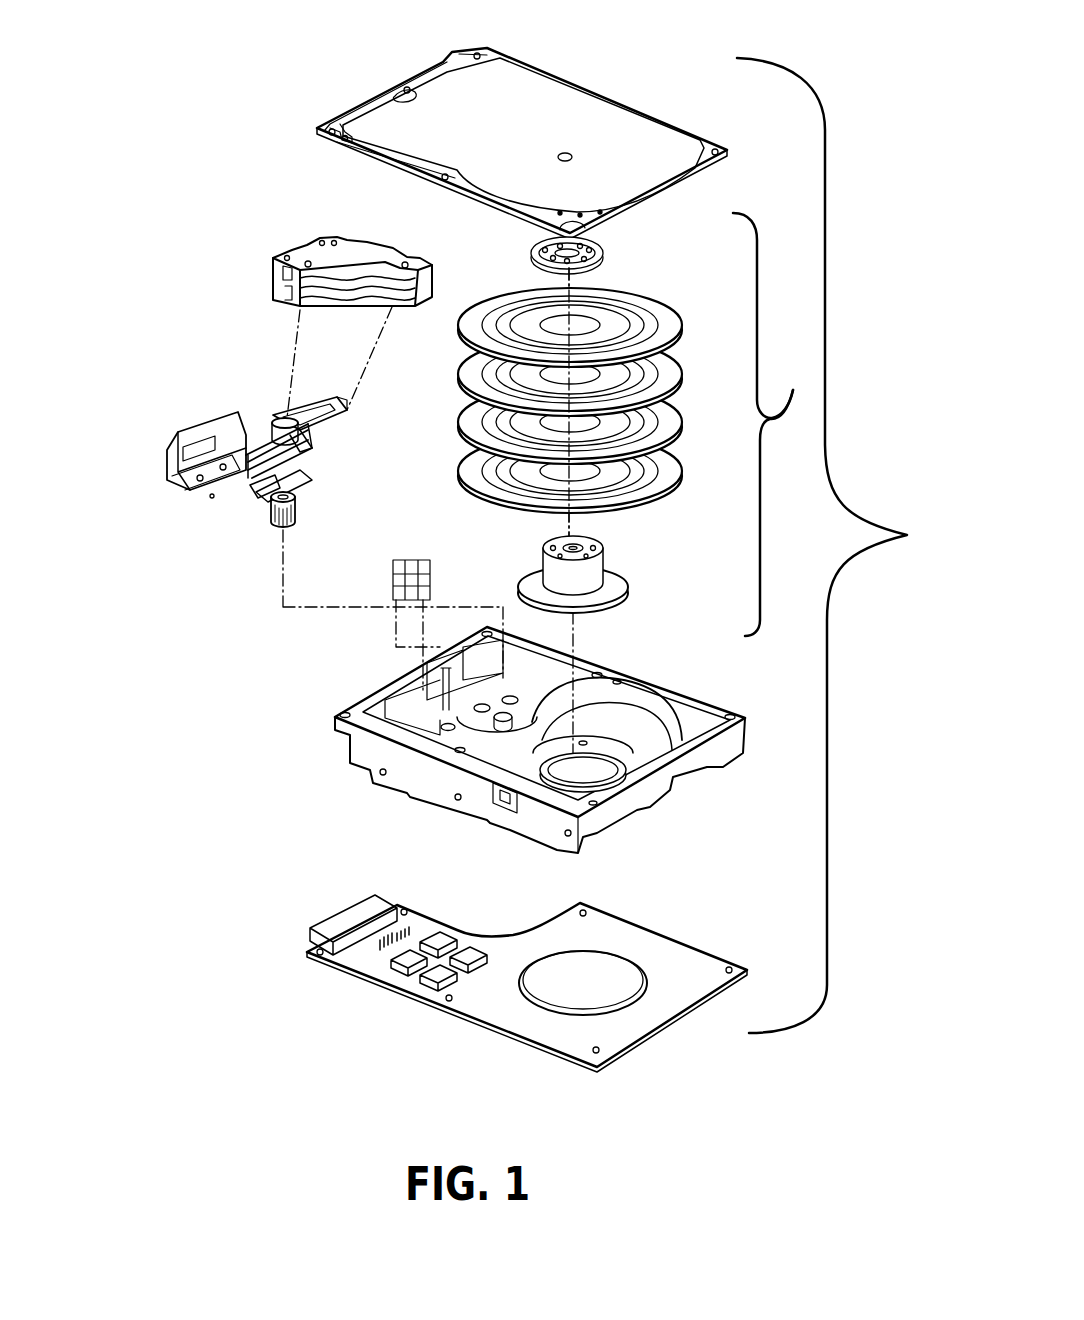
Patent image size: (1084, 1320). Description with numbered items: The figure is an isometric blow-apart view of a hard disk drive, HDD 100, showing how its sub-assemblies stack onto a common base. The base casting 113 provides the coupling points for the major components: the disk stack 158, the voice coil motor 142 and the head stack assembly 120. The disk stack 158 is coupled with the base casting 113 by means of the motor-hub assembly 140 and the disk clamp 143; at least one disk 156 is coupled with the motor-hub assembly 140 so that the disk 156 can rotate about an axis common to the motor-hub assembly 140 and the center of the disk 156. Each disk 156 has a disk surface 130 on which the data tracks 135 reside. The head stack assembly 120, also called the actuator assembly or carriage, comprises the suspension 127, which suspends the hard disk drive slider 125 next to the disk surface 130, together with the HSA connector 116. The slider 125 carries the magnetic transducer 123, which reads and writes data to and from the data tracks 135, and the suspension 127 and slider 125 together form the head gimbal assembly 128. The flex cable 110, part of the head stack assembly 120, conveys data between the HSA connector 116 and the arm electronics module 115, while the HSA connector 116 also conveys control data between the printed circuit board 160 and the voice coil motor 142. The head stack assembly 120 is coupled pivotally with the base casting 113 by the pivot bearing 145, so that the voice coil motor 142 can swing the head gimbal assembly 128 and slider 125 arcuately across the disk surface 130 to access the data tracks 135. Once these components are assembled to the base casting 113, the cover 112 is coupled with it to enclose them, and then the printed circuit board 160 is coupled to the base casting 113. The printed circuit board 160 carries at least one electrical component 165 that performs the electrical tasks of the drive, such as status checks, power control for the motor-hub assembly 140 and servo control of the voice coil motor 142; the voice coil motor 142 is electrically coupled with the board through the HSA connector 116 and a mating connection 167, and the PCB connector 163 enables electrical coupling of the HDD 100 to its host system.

The HDD 100 is at (907, 418).
The flex cable 110 is at (240, 420).
The cover 112 is at (613, 147).
The base casting 113 is at (347, 737).
The arm electronics module 115 is at (250, 410).
The HSA connector 116 is at (197, 493).
The head stack assembly 120 is at (200, 473).
The magnetic transducer 123 is at (220, 556).
The hard disk drive slider 125 is at (232, 487).
The suspension 127 is at (217, 420).
The head gimbal assembly 128 is at (262, 487).
The disk surface 130 is at (537, 383).
The data tracks 135 is at (520, 290).
The motor-hub assembly 140 is at (607, 560).
The voice coil motor 142 is at (272, 247).
The disk clamp 143 is at (530, 252).
The pivot bearing 145 is at (280, 493).
The disk 156 is at (458, 335).
The disk stack 158 is at (770, 424).
The printed circuit board 160 is at (468, 990).
The PCB connector 163 is at (352, 918).
The electrical component 165 is at (435, 970).
The mating connection 167 is at (380, 947).